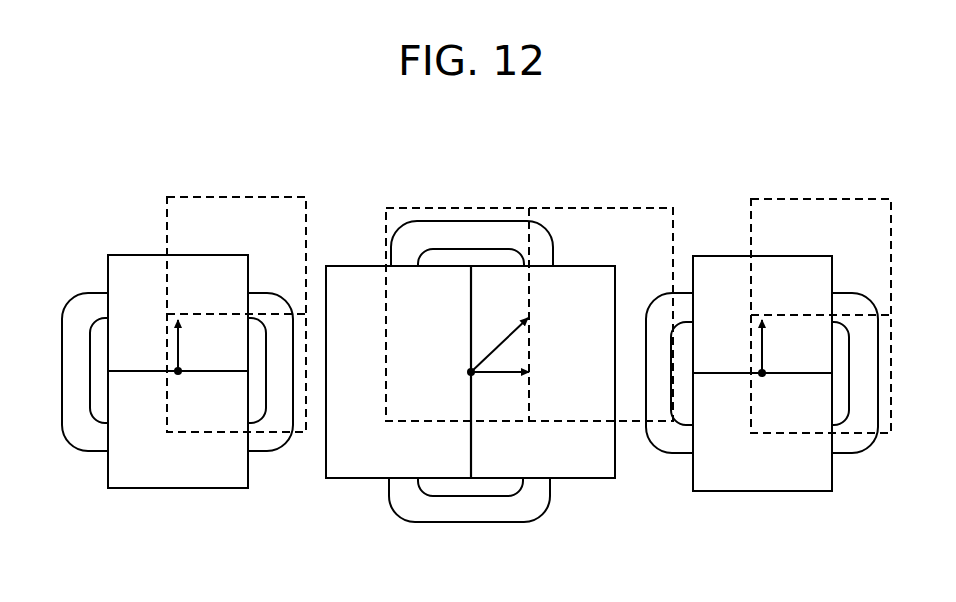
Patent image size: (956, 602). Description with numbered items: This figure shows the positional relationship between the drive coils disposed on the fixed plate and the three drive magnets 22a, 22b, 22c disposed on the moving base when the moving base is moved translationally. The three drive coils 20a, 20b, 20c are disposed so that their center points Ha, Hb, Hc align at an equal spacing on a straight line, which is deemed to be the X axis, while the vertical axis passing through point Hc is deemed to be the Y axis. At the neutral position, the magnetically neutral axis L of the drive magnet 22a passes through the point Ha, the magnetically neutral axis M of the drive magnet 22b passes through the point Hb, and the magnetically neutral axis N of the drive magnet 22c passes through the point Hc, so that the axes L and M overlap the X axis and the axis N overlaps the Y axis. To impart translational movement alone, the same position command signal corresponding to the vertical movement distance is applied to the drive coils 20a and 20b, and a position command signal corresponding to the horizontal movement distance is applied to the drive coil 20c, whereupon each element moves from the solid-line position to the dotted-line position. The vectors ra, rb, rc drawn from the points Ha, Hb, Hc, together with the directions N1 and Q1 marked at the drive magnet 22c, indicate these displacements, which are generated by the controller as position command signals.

The drive coil 20a is at (860, 455).
The drive coil 20b is at (82, 450).
The drive coil 20c is at (427, 513).
The drive magnet 22a is at (824, 196).
The drive magnet 22b is at (240, 194).
The drive magnet 22c is at (616, 204).
The magnetically neutral axis M is at (126, 373).
The magnetically neutral axis L is at (714, 375).
The magnetically neutral axis N is at (472, 445).
The normal direction vector N1 is at (517, 379).
The direction vector Q1 is at (518, 334).
The center point Ha is at (766, 375).
The center point Hb is at (182, 373).
The center point Hc is at (469, 371).
The position vector of magnet 22a ra is at (740, 349).
The position vector of magnet 22b rb is at (155, 346).
The position vector of magnet 22c rc is at (496, 393).